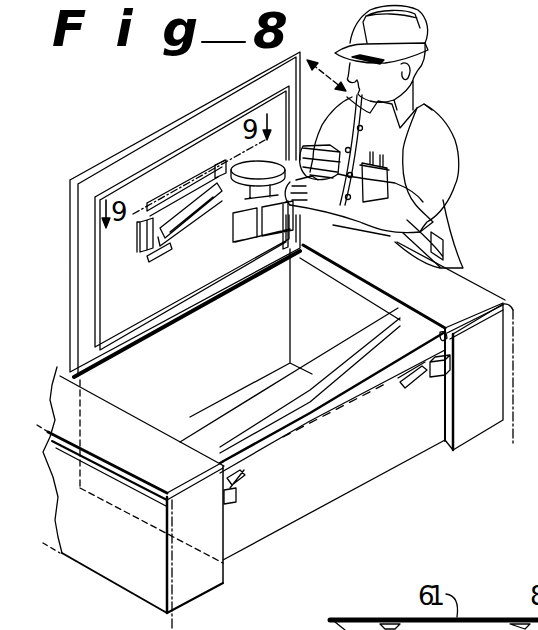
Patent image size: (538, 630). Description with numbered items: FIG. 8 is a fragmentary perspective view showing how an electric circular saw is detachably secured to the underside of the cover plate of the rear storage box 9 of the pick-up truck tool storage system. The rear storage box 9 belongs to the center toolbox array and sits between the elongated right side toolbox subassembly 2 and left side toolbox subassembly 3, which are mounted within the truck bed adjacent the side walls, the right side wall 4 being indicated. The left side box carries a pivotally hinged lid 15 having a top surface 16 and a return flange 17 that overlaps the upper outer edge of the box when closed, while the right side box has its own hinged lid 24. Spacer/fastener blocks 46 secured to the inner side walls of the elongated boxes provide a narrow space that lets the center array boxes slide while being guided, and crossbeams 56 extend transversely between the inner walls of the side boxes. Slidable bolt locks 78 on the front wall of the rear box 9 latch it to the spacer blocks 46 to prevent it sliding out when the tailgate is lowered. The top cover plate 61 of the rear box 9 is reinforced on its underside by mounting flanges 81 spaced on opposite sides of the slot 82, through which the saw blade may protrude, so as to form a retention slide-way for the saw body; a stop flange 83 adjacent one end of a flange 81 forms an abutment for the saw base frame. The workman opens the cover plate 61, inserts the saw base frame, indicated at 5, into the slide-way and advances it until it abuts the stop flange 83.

The right side toolbox subassembly 2 is at (471, 442).
The left side toolbox subassembly 3 is at (189, 603).
The right side wall 4 is at (515, 362).
The dispenser assembly 5 is at (251, 229).
The rear storage box 9 is at (348, 467).
The lid 15 is at (63, 407).
The top surface 16 is at (134, 451).
The return flange 17 is at (108, 472).
The hinged lid 24 is at (446, 298).
The spacer/fastener blocks 46 is at (455, 368).
The crossbeams 56 is at (350, 370).
The top cover plate 61 is at (72, 210).
The slidable bolt locks 78 is at (404, 388).
The mounting flanges 81 is at (156, 205).
The slot 82 is at (203, 215).
The stop flange 83 is at (137, 240).